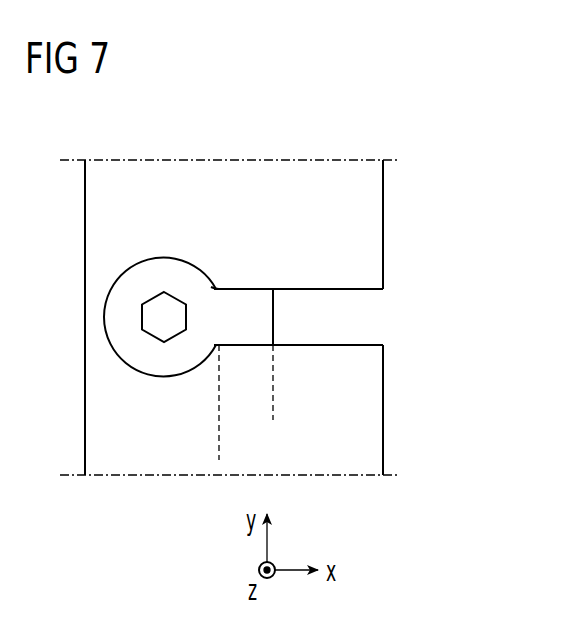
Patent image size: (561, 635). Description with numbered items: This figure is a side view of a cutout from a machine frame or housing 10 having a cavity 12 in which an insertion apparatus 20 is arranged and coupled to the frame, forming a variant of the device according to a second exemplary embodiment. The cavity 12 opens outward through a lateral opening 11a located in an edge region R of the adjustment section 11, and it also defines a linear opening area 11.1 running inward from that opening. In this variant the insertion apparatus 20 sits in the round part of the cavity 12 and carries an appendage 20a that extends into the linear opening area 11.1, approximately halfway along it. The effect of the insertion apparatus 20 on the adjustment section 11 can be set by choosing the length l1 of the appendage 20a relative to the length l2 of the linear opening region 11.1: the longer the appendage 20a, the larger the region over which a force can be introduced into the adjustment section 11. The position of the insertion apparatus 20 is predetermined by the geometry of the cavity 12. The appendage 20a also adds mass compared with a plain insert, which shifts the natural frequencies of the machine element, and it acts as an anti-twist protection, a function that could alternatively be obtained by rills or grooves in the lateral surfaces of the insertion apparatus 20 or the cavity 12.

The component / workpiece 10 is at (367, 112).
The adjustment section 11 is at (262, 248).
The linear opening area 11.1 is at (305, 287).
The lateral opening 11a is at (381, 318).
The cavity 12 is at (301, 324).
The insertion apparatus 20 is at (150, 353).
The appendage 20a is at (244, 303).
The edge region R is at (369, 371).
The length of the appendage l1 is at (273, 412).
The length of the linear opening region l2 is at (383, 450).